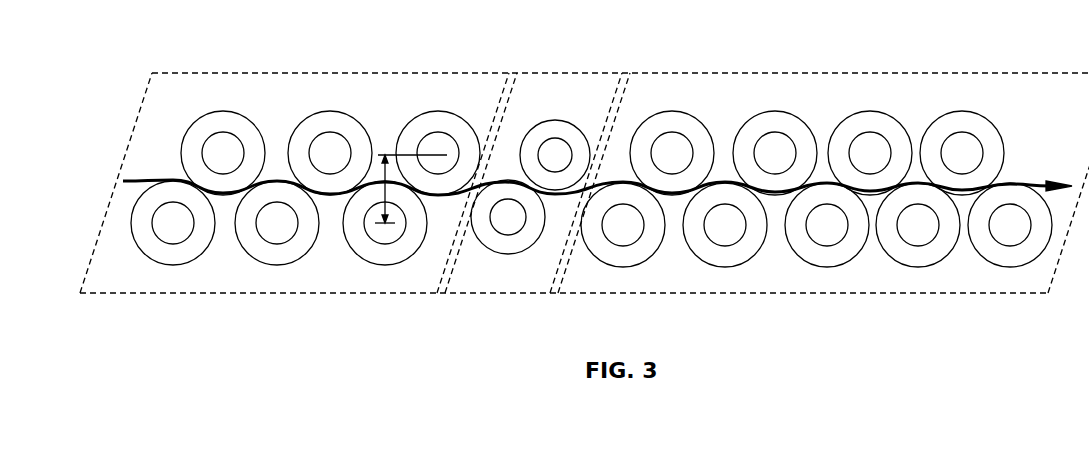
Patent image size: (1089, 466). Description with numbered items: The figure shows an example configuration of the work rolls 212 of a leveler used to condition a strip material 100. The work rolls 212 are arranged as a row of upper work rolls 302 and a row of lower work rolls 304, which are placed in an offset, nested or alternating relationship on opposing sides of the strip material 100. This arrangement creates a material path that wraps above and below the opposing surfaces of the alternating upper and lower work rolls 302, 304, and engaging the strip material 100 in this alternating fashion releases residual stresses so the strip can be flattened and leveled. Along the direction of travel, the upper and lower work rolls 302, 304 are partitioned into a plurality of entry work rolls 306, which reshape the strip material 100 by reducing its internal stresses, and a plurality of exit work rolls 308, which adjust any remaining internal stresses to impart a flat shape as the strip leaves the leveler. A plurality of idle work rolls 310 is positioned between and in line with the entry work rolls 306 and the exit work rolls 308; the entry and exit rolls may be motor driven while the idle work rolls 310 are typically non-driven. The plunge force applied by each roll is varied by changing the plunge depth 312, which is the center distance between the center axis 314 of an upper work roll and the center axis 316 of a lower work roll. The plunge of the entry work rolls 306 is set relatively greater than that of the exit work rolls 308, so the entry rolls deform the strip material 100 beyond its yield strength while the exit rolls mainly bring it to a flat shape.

The strip material 100 is at (138, 180).
The work rolls 212 is at (1008, 267).
The upper work rolls 302 is at (206, 111).
The lower work rolls 304 is at (168, 265).
The entry work rolls 306 is at (298, 72).
The exit work rolls 308 is at (872, 72).
The idle work rolls 310 is at (575, 72).
The plunge depth 312 is at (456, 218).
The center axis of upper work roll 314 is at (437, 155).
The center axis of lower work roll 316 is at (385, 224).